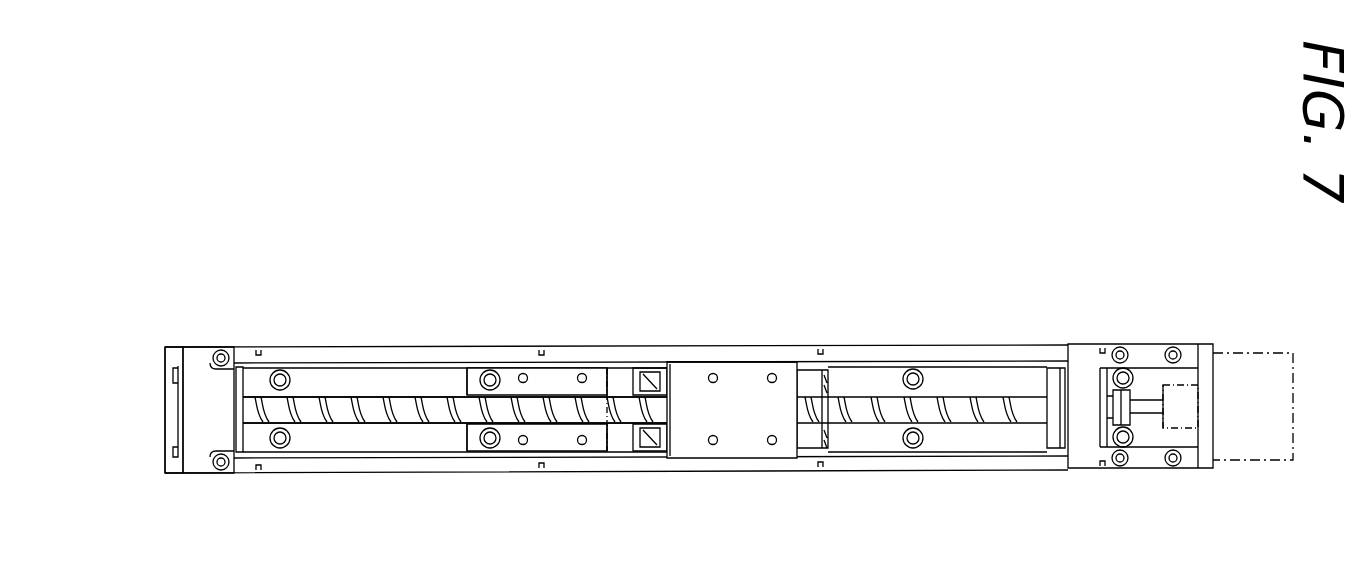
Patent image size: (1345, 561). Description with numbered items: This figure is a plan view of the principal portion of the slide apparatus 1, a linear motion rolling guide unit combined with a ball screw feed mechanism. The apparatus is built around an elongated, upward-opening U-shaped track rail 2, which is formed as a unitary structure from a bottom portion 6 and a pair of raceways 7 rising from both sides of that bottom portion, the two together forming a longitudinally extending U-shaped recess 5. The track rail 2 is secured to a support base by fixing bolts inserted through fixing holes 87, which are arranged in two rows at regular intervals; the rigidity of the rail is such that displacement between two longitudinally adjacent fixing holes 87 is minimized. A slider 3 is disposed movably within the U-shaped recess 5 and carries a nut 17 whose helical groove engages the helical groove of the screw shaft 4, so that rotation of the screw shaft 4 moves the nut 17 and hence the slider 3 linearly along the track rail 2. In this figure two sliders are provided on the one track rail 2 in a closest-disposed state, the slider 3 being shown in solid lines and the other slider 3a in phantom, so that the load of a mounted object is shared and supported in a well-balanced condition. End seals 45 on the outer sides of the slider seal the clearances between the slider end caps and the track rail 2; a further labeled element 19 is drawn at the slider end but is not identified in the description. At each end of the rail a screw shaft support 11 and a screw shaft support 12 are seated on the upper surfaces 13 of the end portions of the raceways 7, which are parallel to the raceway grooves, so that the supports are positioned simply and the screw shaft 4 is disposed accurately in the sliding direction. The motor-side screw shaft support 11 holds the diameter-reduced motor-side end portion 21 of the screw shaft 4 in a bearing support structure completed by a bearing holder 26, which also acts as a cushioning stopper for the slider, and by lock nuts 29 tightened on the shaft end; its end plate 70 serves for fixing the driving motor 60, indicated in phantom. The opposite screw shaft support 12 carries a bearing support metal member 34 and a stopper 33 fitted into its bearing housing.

The slide apparatus 1 is at (710, 328).
The track rail 2 is at (602, 473).
The slider 3 is at (752, 359).
The slider 3a is at (572, 359).
The screw shaft 4 is at (978, 400).
The U-shaped recess 5 is at (394, 440).
The bottom portion 6 is at (380, 383).
The raceways 7 is at (1022, 356).
The screw shaft support 11 is at (1088, 383).
The screw shaft support 12 is at (199, 377).
The upper surfaces 13 is at (865, 356).
The nut 17 is at (681, 359).
The table end plate 19 is at (668, 360).
The motor-side end portion 21 is at (1148, 413).
The bearing holder 26 is at (1056, 368).
The lock nuts 29 is at (1131, 384).
The stopper 33 is at (240, 388).
The bearing support metal member 34 is at (183, 398).
The end seals 45 is at (655, 452).
The driving motor 60 is at (1277, 353).
The end plate 70 is at (1205, 393).
The fixing holes 87 is at (281, 370).